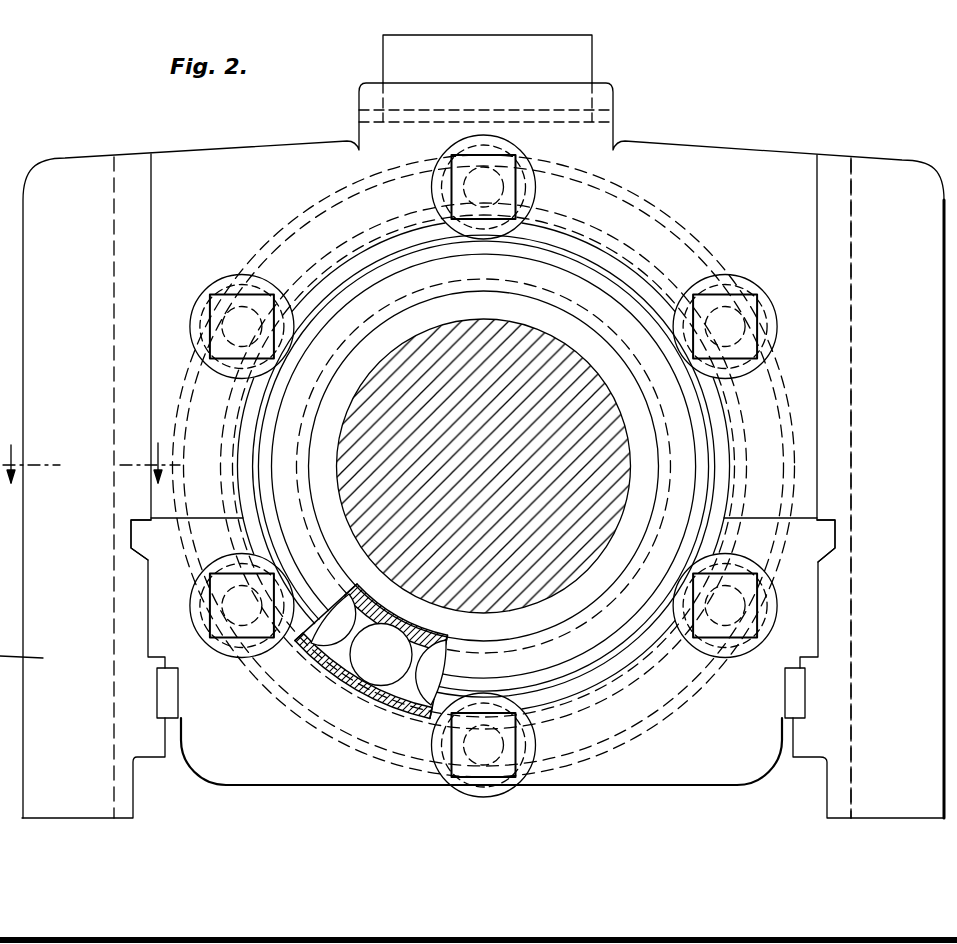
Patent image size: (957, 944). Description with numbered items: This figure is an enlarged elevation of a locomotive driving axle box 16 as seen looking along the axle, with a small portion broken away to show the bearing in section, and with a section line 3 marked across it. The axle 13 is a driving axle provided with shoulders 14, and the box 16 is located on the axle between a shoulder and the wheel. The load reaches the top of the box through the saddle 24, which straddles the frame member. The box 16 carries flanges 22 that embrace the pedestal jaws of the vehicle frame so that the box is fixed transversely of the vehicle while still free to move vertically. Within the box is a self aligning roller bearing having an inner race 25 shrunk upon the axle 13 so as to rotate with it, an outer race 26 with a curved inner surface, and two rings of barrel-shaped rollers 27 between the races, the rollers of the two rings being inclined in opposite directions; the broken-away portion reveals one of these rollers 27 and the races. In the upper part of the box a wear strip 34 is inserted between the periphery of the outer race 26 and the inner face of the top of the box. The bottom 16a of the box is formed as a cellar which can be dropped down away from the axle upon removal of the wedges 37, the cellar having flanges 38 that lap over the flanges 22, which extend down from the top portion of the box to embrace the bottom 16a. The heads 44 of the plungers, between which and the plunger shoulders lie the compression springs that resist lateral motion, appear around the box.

The section line 3- 3 is at (83, 450).
The axle 13 is at (486, 330).
The shoulders 14 is at (426, 318).
The axle box 16 is at (472, 450).
The bottom of the box 16a is at (635, 768).
The flanges 22 is at (907, 172).
The saddles 24 is at (573, 66).
The inner race 25 is at (452, 630).
The outer race 26 is at (622, 184).
The barrel-shaped rollers 27 is at (372, 672).
The wear strip 34 is at (285, 233).
The wedges 37 is at (170, 688).
The flanges 38 is at (140, 538).
The heads 44 is at (508, 181).